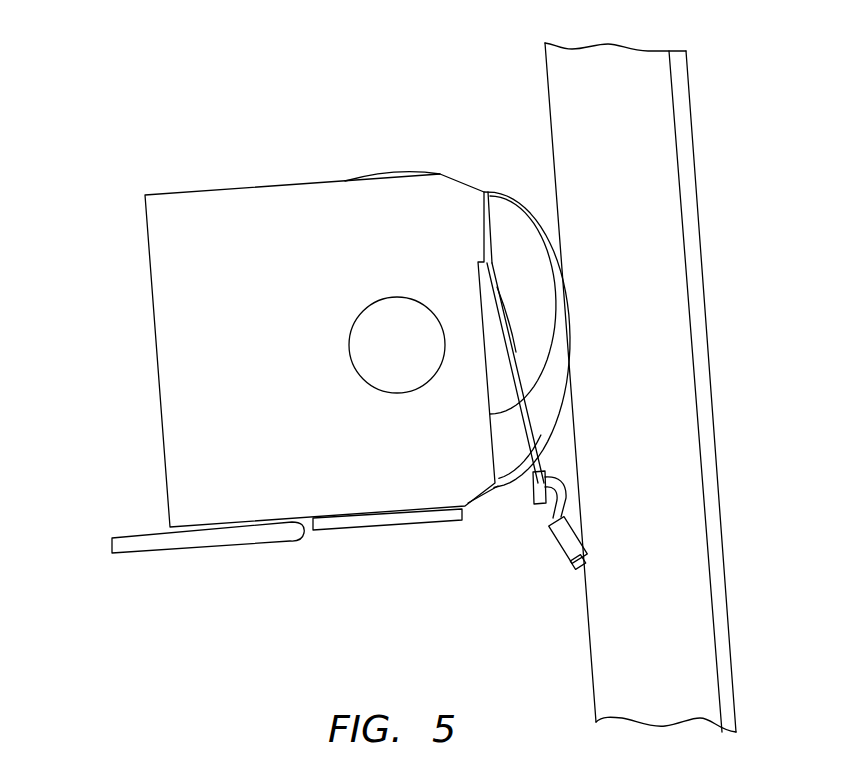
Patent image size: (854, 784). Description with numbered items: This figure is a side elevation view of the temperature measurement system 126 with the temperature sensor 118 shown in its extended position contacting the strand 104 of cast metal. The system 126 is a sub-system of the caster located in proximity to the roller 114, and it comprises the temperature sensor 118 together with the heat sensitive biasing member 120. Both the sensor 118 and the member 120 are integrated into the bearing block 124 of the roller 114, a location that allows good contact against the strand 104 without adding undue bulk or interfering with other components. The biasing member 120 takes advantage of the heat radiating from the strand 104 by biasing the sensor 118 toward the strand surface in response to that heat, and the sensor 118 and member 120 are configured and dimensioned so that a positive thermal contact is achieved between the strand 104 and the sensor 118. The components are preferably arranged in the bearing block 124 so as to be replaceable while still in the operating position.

The strand 104 is at (536, 72).
The roller 114 is at (512, 235).
The temperature sensor 118 is at (538, 548).
The heat sensitive biasing member 120 is at (529, 361).
The bearing block 124 is at (160, 265).
The temperature measurement system 126 is at (166, 135).